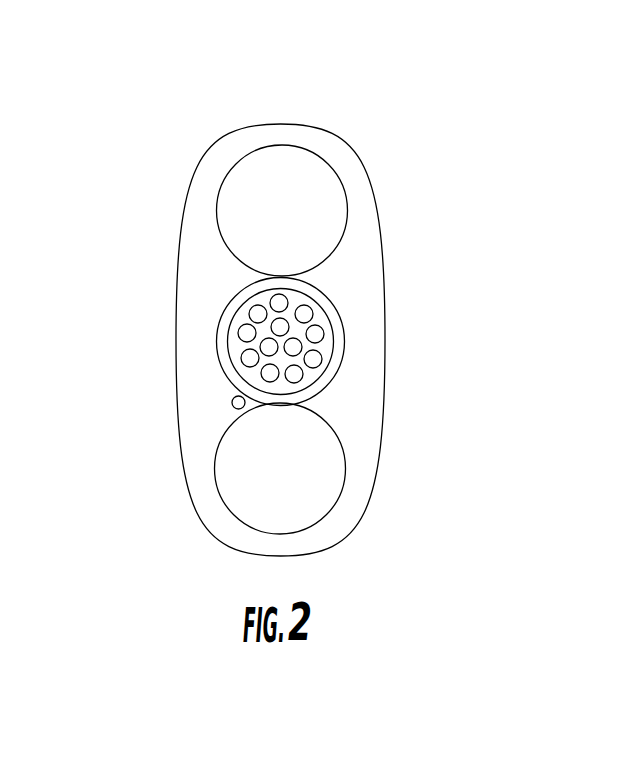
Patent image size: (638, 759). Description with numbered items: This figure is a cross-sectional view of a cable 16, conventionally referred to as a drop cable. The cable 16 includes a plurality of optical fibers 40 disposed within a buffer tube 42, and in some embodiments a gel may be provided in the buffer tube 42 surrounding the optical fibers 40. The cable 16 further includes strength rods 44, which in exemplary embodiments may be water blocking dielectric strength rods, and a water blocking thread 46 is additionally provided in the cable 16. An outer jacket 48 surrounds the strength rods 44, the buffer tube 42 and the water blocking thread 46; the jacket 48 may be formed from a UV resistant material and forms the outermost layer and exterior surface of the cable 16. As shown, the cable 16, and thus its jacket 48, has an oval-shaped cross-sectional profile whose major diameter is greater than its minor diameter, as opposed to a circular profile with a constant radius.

The cable 16 is at (425, 120).
The outer jacket 48 is at (238, 137).
The strength rods 44 is at (288, 208).
The buffer tube 42 is at (242, 292).
The optical fibers 40 is at (262, 373).
The water blocking thread 46 is at (236, 410).